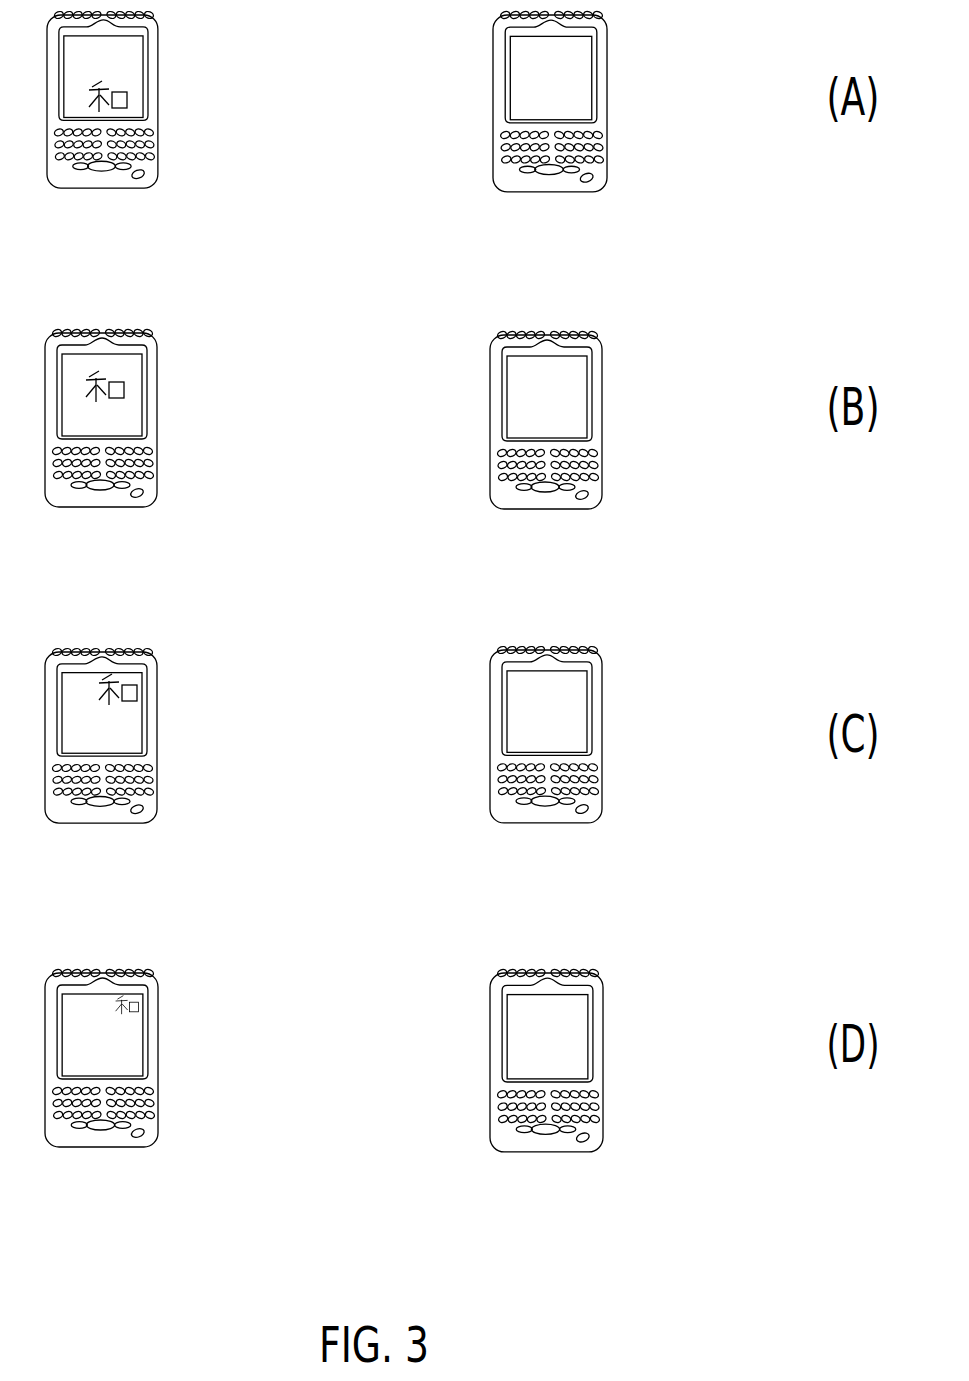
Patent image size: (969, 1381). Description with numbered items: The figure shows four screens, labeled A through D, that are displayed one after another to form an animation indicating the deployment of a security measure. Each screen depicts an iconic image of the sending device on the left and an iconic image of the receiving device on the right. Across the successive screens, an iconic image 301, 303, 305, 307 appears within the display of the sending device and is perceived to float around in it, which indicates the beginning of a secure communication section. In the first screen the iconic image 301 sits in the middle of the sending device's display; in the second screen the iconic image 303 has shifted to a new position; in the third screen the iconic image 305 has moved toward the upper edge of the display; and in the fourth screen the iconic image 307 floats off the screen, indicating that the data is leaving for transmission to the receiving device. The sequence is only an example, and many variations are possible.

The iconic image 301 is at (128, 100).
The iconic image 303 is at (128, 396).
The iconic image 305 is at (130, 692).
The iconic image 307 is at (136, 1010).